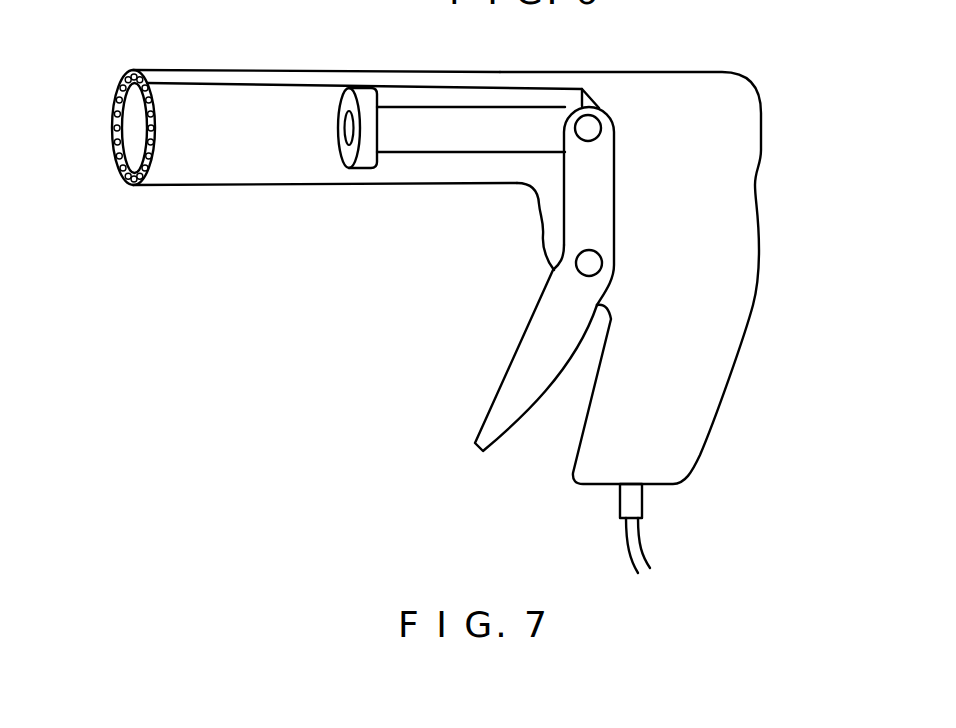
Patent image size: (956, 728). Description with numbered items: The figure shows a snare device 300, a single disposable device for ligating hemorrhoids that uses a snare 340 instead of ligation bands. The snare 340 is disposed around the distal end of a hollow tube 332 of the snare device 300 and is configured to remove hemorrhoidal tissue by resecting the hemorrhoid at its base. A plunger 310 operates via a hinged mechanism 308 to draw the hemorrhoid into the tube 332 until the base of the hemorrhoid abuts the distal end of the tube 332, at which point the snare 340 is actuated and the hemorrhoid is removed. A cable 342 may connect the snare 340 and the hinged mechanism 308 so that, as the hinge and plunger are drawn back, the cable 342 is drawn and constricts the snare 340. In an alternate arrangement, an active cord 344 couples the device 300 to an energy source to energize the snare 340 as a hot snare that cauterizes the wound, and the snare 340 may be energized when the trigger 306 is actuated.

The snare device 300 is at (812, 56).
The trigger 306 is at (570, 285).
The hinged mechanism 308 is at (607, 170).
The plunger 310 is at (487, 137).
The hollow tube 332 is at (175, 158).
The snare 340 is at (115, 93).
The cable 342 is at (263, 86).
The active cord 344 is at (642, 550).